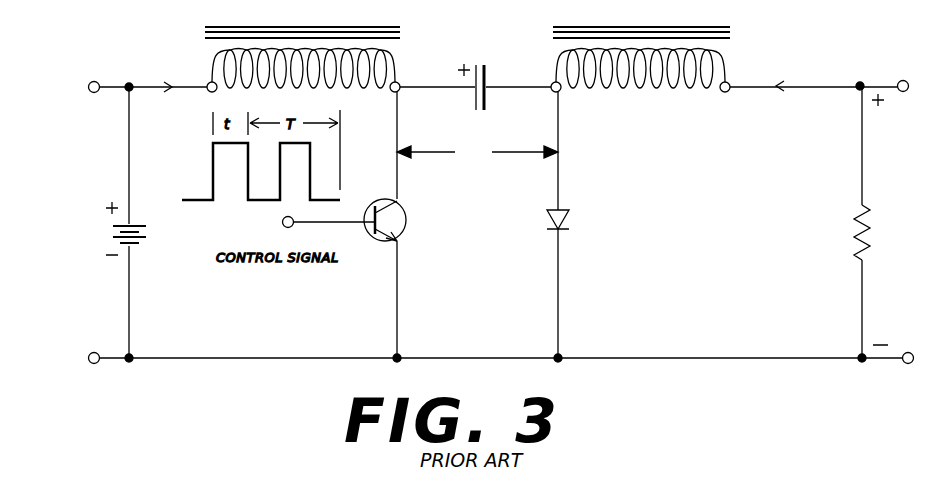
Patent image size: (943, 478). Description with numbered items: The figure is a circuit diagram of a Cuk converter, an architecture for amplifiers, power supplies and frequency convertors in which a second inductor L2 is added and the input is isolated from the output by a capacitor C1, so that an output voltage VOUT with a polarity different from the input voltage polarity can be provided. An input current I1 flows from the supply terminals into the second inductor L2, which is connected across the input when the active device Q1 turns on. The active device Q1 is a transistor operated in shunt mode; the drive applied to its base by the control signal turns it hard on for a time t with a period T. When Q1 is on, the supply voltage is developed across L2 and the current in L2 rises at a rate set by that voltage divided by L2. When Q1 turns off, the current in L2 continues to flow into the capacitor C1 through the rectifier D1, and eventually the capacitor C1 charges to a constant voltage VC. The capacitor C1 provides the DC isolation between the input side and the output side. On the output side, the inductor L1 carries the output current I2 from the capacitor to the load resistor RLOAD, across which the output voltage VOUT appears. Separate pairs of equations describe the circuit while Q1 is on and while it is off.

The second inductor L2 is at (302, 49).
The inductor L1 is at (640, 48).
The capacitor C1 is at (471, 74).
The active device Q1 is at (358, 220).
The rectifier D1 is at (572, 221).
The load resistor RLOAD is at (884, 232).
The input current I1 is at (146, 76).
The output current I2 is at (783, 69).
The capacitor voltage VC is at (477, 154).
The output voltage VOUT is at (891, 219).